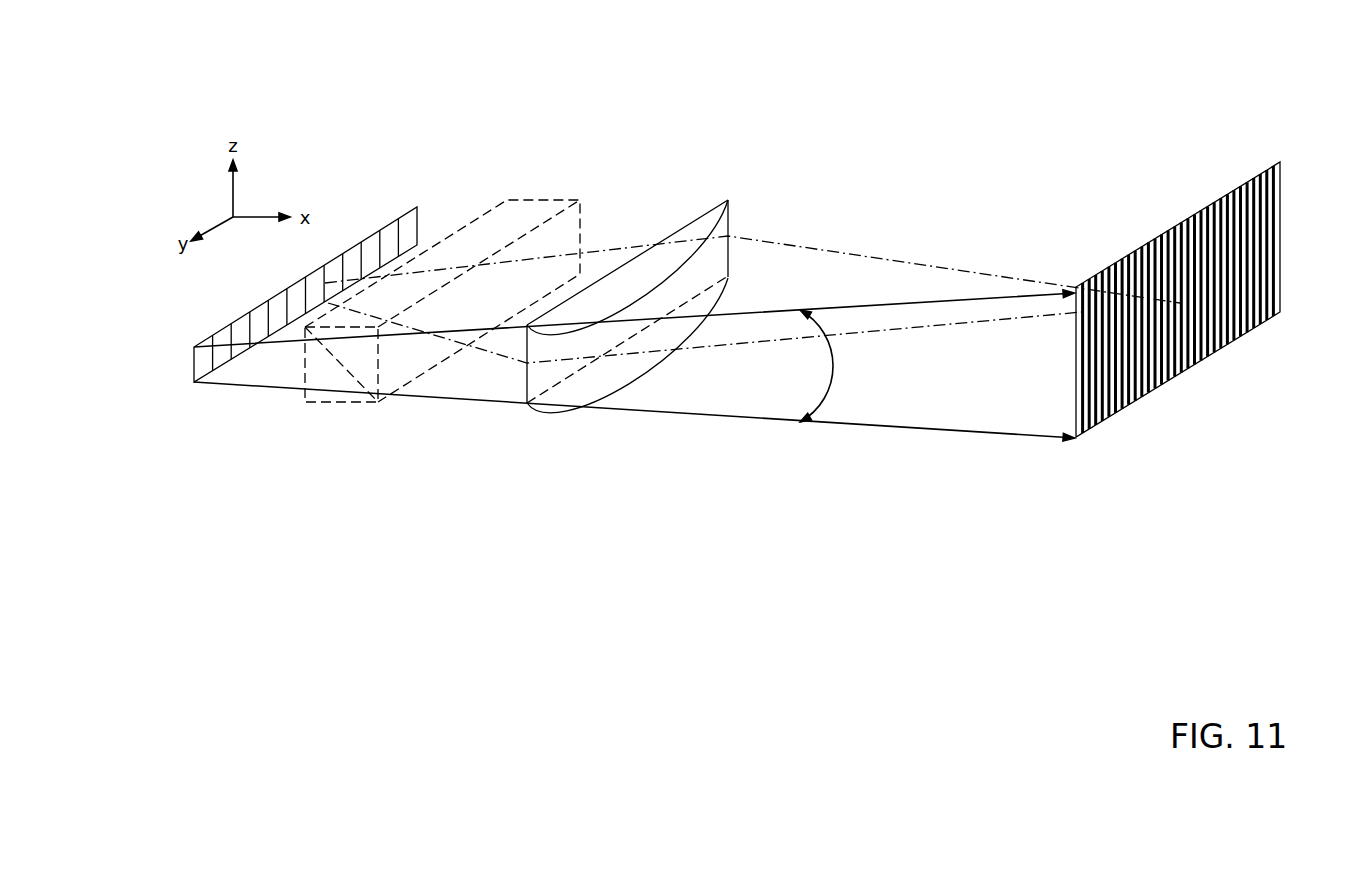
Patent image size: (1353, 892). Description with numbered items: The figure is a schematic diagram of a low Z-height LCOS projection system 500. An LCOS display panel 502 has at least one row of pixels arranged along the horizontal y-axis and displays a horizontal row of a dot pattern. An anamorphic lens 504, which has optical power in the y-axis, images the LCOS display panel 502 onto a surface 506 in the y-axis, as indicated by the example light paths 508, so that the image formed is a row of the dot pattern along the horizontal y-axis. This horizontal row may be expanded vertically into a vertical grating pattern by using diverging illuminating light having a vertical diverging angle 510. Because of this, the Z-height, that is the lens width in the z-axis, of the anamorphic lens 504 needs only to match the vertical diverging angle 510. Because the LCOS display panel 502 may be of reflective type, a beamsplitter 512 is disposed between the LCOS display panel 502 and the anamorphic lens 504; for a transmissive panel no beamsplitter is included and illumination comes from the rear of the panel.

The low Z-height LCOS projection system 500 is at (375, 95).
The LCOS display panel 502 is at (417, 207).
The anamorphic lens 504 is at (728, 200).
The surface 506 is at (1278, 163).
The light paths 508 is at (898, 260).
The vertical diverging angle α 510 is at (827, 378).
The beamsplitter 512 is at (572, 200).